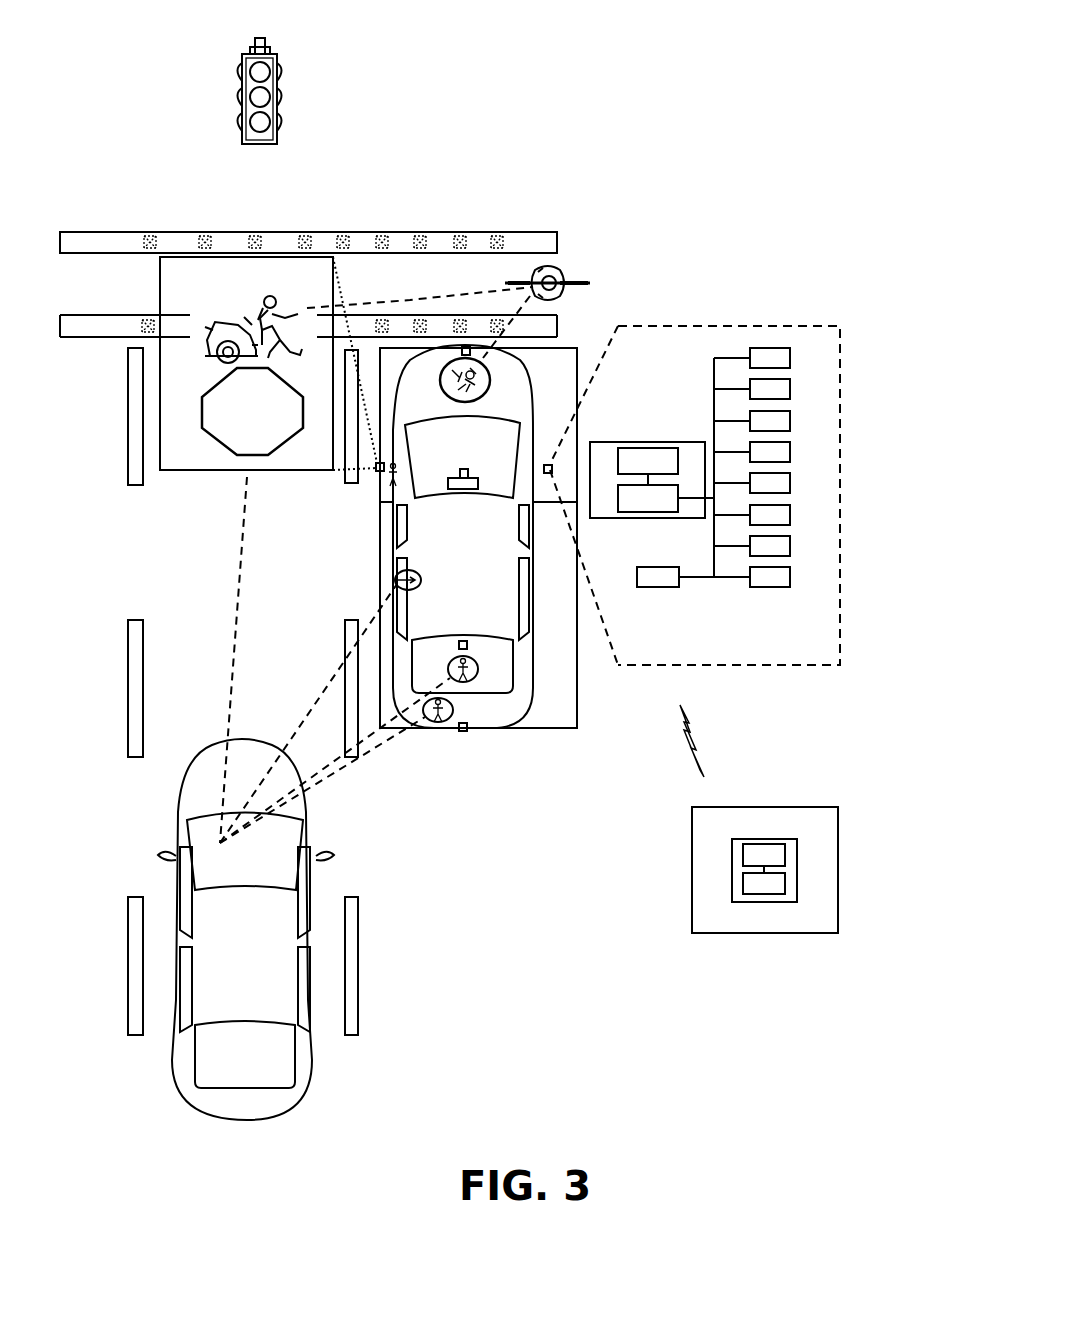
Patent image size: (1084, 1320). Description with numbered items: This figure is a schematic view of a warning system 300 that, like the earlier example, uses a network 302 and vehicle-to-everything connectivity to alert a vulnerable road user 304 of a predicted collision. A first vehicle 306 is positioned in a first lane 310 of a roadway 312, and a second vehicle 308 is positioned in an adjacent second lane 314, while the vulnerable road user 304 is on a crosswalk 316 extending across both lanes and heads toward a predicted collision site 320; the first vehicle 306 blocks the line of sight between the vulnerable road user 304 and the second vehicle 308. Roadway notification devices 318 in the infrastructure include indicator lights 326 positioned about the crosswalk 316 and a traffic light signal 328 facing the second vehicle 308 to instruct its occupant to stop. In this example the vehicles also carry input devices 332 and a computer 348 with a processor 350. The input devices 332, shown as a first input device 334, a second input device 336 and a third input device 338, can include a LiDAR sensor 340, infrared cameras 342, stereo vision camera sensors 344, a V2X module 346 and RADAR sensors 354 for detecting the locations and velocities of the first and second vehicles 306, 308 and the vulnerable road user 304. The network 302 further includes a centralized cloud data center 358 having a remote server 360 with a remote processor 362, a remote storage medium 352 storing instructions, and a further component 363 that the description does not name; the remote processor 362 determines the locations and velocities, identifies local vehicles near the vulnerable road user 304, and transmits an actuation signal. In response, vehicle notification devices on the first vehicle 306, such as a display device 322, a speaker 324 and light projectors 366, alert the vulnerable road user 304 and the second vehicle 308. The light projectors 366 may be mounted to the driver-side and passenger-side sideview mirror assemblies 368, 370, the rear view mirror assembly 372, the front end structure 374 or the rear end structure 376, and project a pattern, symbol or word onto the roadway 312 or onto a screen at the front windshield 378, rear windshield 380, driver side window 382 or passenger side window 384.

The warning system 300 is at (765, 458).
The network 302 is at (794, 887).
The vulnerable road user 304 is at (563, 280).
The first vehicle 306 is at (388, 708).
The second vehicle 308 is at (168, 1074).
The first lane 310 is at (463, 554).
The roadway 312 is at (97, 522).
The second lane 314 is at (271, 692).
The crosswalk 316 is at (308, 284).
The roadway notification device 318 is at (322, 246).
The predicted collision site 320 is at (246, 363).
The display device 322 is at (328, 91).
The speaker 324 is at (657, 587).
The indicator lights 326 is at (383, 232).
The traffic light signal 328 is at (283, 78).
The input devices 332 is at (827, 458).
The first input device 334 is at (790, 358).
The second input device 336 is at (790, 389).
The third input device 338 is at (790, 421).
The LiDAR sensor 340 is at (790, 452).
The infrared cameras 342 is at (790, 483).
The stereo vision camera sensors 344 is at (790, 515).
The V2X module 346 is at (790, 546).
The computer 348 is at (662, 389).
The processor 350 is at (679, 492).
The remote non-transitory host computer readable storage medium 352 is at (655, 448).
The RADAR sensors 354 is at (790, 577).
The centralized cloud data center 358 is at (800, 878).
The remote server 360 is at (786, 903).
The remote processor 362 is at (786, 884).
The remote processor 363 is at (786, 855).
The light projectors 366 is at (546, 466).
The driver-side sideview mirror assembly 368 is at (380, 472).
The passenger-side sideview mirror assembly 370 is at (543, 462).
The rear view mirror assembly 372 is at (465, 490).
The front end structure 374 is at (436, 360).
The rear end structure 376 is at (469, 732).
The front windshield 378 is at (490, 418).
The rear windshield 380 is at (505, 697).
The driver side window 382 is at (398, 520).
The passenger side window 384 is at (528, 535).